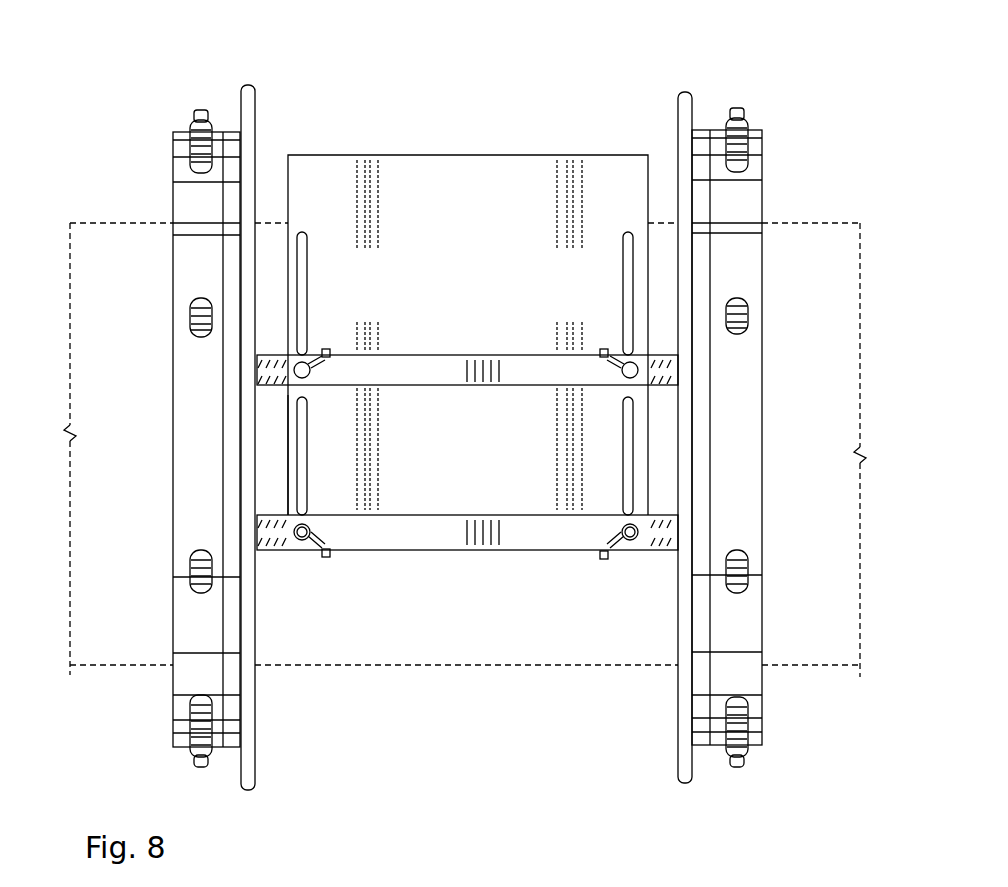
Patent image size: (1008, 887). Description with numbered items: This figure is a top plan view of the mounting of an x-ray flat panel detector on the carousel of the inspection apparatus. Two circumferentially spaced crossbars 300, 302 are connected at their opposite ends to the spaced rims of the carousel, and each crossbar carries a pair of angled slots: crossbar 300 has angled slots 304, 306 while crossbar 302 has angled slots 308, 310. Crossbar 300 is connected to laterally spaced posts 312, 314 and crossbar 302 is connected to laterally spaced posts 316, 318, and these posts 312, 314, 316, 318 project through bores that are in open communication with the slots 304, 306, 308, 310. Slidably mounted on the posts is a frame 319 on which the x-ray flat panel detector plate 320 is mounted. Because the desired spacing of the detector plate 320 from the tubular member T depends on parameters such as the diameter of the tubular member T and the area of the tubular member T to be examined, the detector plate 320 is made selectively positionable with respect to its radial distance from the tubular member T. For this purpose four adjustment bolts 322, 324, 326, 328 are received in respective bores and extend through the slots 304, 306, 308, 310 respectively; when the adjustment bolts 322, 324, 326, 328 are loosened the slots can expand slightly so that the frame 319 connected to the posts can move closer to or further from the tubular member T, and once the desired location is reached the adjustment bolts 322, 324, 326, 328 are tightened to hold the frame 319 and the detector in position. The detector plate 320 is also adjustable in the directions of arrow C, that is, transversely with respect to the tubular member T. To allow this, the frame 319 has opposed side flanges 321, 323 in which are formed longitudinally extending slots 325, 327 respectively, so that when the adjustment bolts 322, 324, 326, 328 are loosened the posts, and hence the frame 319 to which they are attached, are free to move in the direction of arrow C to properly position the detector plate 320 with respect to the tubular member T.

The crossbar 300 is at (438, 537).
The crossbar 302 is at (437, 367).
The angled slot 304 is at (312, 527).
The angled slot 306 is at (600, 528).
The angled slot 308 is at (322, 377).
The angled slot 310 is at (593, 363).
The post 312 is at (303, 538).
The post 314 is at (630, 538).
The post 316 is at (295, 373).
The post 318 is at (645, 373).
The frame 319 is at (560, 153).
The x-ray flat panel detector plate 320 is at (490, 202).
The side flange 321 is at (628, 293).
The adjustment bolt 322 is at (325, 562).
The side flange 323 is at (293, 500).
The adjustment bolt 324 is at (603, 562).
The longitudinally extending slot 325 is at (632, 468).
The adjustment bolt 326 is at (327, 350).
The longitudinally extending slot 327 is at (302, 263).
The adjustment bolt 328 is at (610, 350).
The tubular member T is at (785, 222).
The arrow C is at (430, 122).